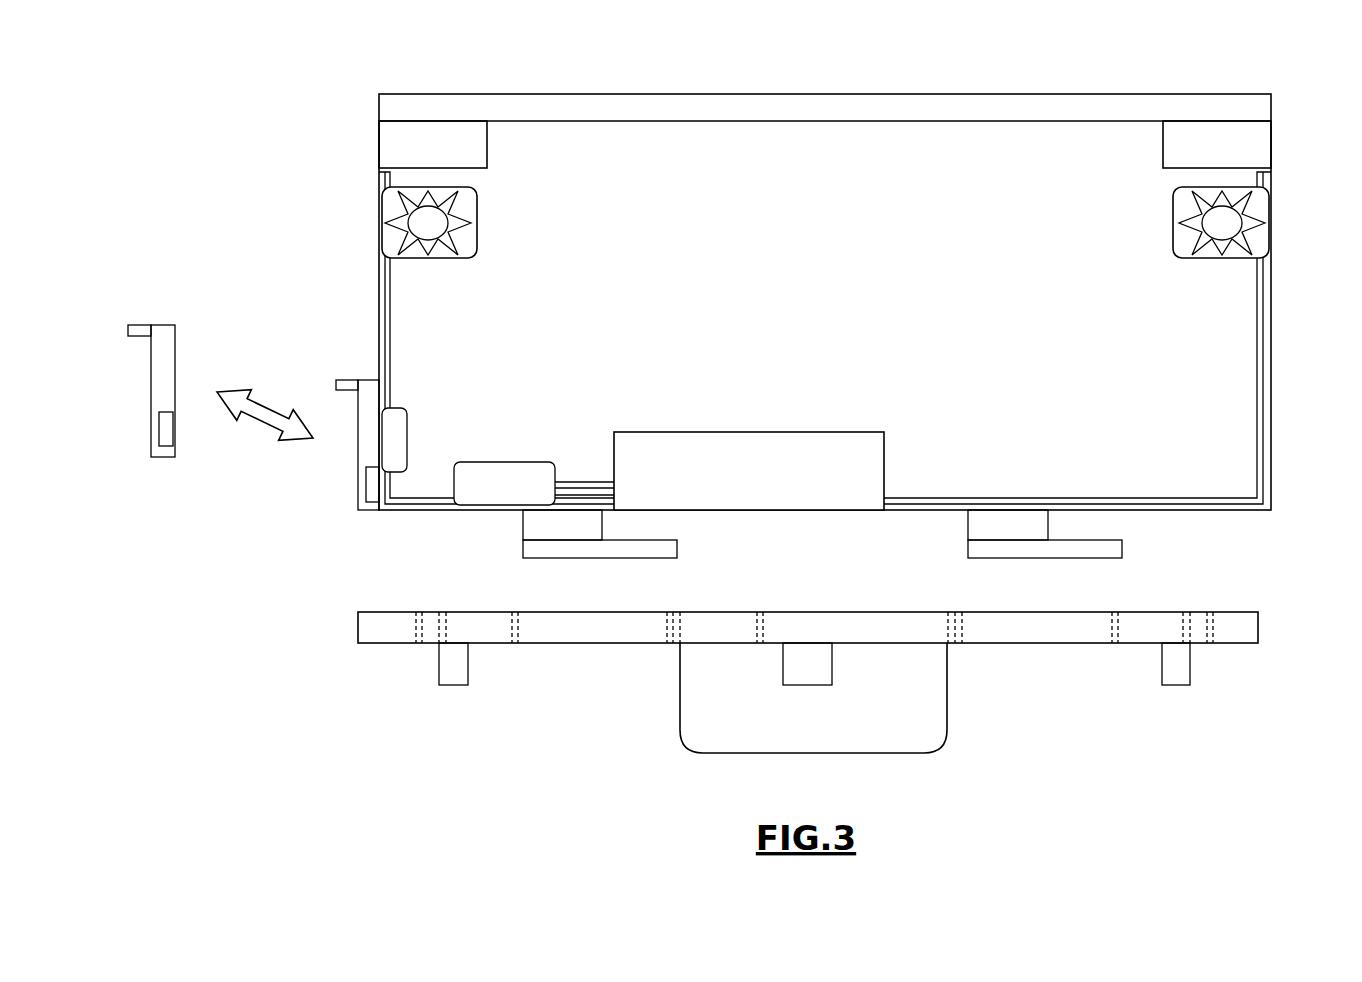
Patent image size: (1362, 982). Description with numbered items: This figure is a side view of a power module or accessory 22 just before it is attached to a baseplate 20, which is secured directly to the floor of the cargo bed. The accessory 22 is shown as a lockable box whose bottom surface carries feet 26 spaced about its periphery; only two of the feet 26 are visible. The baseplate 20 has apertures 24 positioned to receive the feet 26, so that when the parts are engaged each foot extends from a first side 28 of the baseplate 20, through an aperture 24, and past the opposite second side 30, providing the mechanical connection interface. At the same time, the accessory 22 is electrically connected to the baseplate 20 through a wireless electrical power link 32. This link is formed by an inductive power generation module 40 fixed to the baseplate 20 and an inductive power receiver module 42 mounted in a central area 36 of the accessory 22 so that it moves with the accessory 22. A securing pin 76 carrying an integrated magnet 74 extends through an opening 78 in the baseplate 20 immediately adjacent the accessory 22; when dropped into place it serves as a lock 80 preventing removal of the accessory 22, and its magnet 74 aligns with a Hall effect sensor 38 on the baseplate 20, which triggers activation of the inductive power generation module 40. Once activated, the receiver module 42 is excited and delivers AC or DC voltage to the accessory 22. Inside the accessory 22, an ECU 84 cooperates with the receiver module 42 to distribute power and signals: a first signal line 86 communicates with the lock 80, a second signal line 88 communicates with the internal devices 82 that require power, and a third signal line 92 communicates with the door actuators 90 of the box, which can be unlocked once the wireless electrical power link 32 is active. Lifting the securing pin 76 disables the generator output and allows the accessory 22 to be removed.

The baseplate 20 is at (1058, 628).
The accessory 22 is at (1010, 150).
The apertures 24 is at (518, 635).
The foot 26 is at (640, 552).
The first side 28 is at (1242, 612).
The second side 30 is at (1242, 645).
The wireless electrical power link 32 is at (995, 745).
The area 36 is at (917, 512).
The Hall effect sensor 38 is at (468, 672).
The inductive power generation module 40 is at (703, 745).
The inductive power receiver module 42 is at (840, 432).
The magnet 74 is at (372, 488).
The securing pin 76 is at (347, 415).
The opening 78 is at (415, 635).
The lock 80 is at (407, 420).
The internal devices 82 is at (473, 208).
The ECU 84 is at (515, 462).
The first signal line 86 is at (417, 495).
The second signal line 88 is at (1257, 385).
The door actuators 90 is at (400, 142).
The third signal line 92 is at (381, 178).